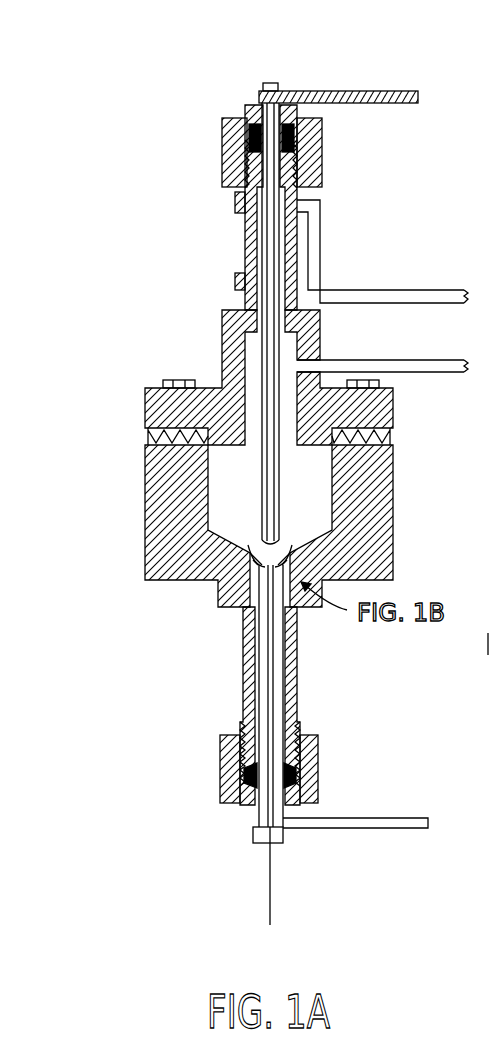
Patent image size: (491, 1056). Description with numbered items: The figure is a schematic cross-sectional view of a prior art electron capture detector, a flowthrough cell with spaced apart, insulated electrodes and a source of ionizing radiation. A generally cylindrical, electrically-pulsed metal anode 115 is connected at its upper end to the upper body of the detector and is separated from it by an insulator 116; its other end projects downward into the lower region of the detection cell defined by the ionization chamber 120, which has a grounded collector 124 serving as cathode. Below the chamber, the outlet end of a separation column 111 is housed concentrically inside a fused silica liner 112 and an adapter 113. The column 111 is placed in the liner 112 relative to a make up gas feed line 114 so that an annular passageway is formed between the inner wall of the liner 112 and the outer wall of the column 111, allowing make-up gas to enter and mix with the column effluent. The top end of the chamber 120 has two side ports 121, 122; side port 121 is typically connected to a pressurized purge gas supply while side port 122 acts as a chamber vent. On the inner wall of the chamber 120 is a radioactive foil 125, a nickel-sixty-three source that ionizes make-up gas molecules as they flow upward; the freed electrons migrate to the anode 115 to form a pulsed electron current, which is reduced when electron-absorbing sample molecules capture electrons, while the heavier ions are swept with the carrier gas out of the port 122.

The separation column 111 is at (271, 895).
The fused silica liner 112 is at (292, 664).
The adapter 113 is at (243, 708).
The make up gas feed line 114 is at (364, 817).
The anode 115 is at (258, 410).
The insulator 116 is at (321, 137).
The ionization chamber 120 is at (322, 492).
The side port 121 is at (374, 290).
The side port 122 is at (355, 360).
The collector 124 is at (228, 552).
The radioactive foil 125 is at (203, 500).